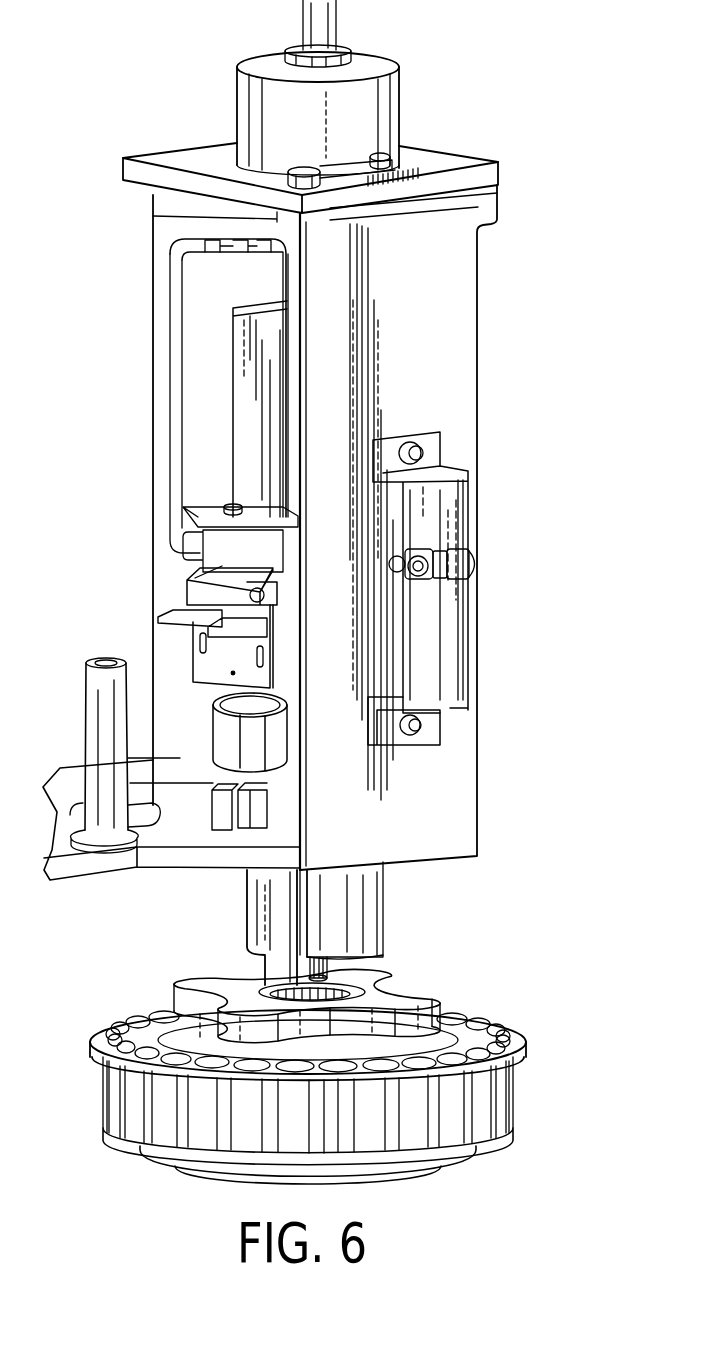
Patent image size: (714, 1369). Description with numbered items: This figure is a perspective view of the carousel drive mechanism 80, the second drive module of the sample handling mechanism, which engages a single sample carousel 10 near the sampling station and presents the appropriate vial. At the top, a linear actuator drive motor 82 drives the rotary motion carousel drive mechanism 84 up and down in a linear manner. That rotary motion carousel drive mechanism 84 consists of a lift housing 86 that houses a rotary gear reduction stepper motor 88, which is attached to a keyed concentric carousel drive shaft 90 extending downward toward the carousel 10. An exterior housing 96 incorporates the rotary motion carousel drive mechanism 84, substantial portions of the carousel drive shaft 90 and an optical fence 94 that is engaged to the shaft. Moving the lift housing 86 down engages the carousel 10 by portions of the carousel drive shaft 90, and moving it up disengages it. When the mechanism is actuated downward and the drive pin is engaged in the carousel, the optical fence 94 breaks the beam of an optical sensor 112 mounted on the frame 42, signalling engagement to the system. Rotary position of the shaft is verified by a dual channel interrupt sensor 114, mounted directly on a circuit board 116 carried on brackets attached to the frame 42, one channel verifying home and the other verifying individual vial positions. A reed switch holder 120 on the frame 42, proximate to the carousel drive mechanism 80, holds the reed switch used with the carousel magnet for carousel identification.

The sample carousel 10 is at (514, 1040).
The frame 42 is at (78, 873).
The carousel drive mechanism 80 is at (522, 342).
The linear actuator drive motor 82 is at (374, 117).
The rotary motion carousel drive mechanism 84 is at (215, 421).
The lift housing 86 is at (175, 380).
The rotary gear reduction stepper motor 88 is at (242, 343).
The carousel drive shaft 90 is at (332, 977).
The optical fence 94 is at (481, 564).
The exterior housing 96 is at (476, 441).
The optical sensor 112 is at (240, 807).
The dual channel interrupt sensor 114 is at (195, 595).
The circuit board 116 is at (203, 665).
The reed switch holder 120 is at (282, 928).